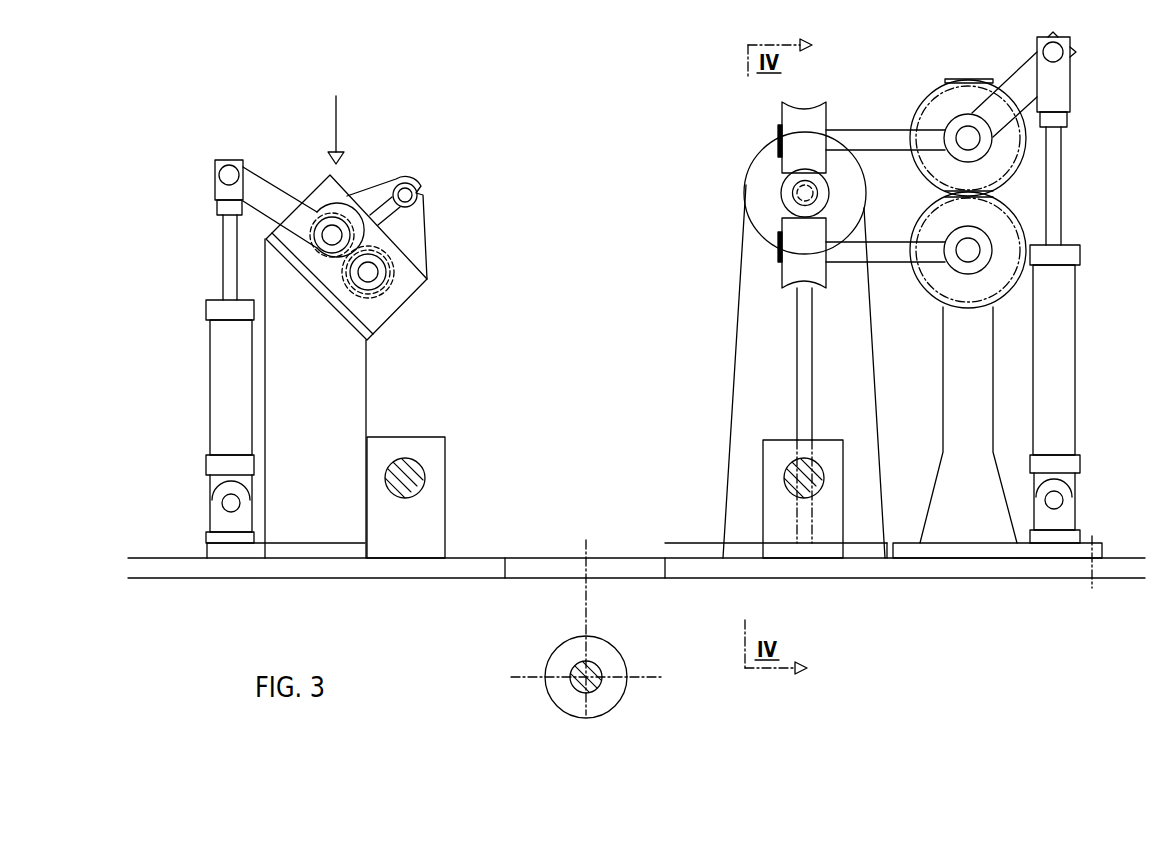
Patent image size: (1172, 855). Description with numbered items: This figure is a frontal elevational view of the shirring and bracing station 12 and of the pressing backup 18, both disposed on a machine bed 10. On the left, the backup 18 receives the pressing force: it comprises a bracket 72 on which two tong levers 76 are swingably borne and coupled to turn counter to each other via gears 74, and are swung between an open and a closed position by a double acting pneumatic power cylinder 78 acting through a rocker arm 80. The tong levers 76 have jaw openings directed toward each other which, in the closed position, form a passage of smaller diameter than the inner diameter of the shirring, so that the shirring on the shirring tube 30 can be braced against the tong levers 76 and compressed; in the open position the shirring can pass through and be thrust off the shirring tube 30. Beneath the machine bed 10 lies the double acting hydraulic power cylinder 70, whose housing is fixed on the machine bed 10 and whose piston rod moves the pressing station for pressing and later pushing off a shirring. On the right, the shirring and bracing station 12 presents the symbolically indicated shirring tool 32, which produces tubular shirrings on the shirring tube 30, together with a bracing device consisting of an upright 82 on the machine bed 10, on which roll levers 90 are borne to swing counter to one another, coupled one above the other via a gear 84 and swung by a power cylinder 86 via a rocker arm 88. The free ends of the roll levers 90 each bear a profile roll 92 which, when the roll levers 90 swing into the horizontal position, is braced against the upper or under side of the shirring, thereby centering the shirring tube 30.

The machine bed 10 is at (173, 568).
The shirring and bracing station 12 is at (750, 116).
The pressing backup 18 is at (335, 119).
The shirring tube 30 is at (805, 193).
The shirring tool 32 is at (744, 182).
The hydraulic power cylinder 70 is at (612, 698).
The bracket 72 is at (343, 372).
The gears 74 is at (315, 253).
The tong levers 76 is at (390, 190).
The pneumatic power cylinder 78 is at (227, 377).
The rocker arm 80 is at (268, 188).
The upright 82 is at (975, 325).
The gear 84 is at (1007, 177).
The power cylinder 86 is at (1060, 377).
The rocker arm 88 is at (1018, 95).
The roll levers 90 is at (856, 140).
The profile rolls 92 is at (797, 116).